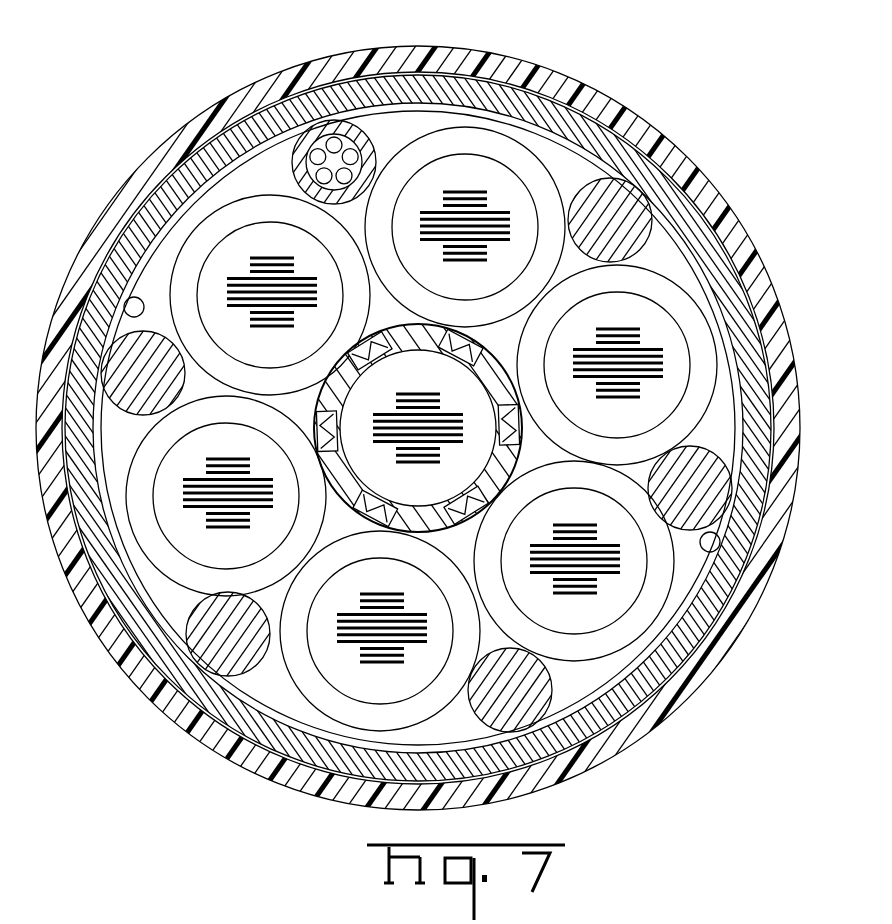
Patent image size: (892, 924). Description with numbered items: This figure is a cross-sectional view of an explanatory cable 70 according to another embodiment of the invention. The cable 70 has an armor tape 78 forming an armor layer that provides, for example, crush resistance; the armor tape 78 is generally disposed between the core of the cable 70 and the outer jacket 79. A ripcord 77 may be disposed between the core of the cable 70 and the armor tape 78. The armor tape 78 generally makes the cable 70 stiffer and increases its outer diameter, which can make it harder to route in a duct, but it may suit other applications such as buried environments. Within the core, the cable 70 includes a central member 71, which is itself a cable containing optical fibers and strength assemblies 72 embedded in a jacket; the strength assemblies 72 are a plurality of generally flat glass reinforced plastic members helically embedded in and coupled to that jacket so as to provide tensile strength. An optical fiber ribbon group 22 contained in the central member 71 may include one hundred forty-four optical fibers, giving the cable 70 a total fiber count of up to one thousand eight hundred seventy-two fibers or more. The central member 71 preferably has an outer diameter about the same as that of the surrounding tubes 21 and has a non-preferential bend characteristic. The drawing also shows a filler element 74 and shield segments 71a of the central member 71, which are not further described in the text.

The cable 70 is at (630, 104).
The outer jacket 79 is at (262, 88).
The armor tape 78 is at (235, 135).
The ripcord 77 is at (133, 297).
The filler 74 is at (646, 204).
The tubes 21 is at (510, 137).
The optical fiber ribbon group 22 is at (520, 190).
The central member 71 is at (470, 362).
The shield segment 71a is at (527, 432).
The strength assemblies 72 is at (318, 425).